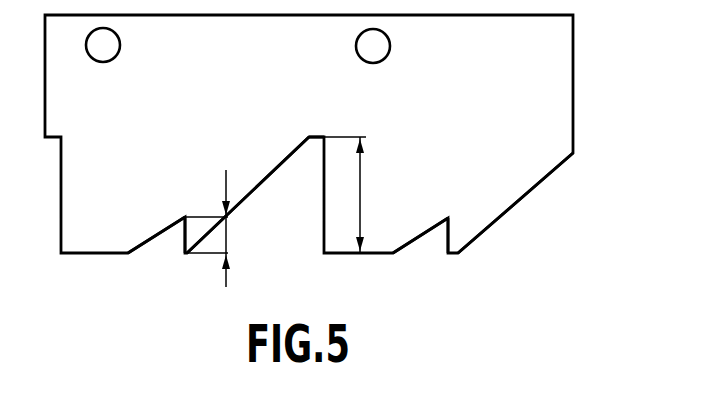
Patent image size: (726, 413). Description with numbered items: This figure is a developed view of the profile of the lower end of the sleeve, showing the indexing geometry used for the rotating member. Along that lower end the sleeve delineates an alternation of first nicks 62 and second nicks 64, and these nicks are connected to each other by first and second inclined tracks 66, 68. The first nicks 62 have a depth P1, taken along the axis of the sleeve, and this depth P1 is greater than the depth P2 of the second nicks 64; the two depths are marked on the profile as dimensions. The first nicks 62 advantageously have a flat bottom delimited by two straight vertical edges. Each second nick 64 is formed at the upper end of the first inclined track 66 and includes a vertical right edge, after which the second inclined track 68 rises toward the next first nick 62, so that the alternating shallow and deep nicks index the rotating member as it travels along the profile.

The first nick 62 is at (316, 136).
The second nick 64 is at (186, 217).
The first inclined track 66 is at (162, 231).
The second inclined track 68 is at (276, 178).
The depth of the first nicks P1 is at (358, 195).
The depth of the second nicks P2 is at (221, 228).